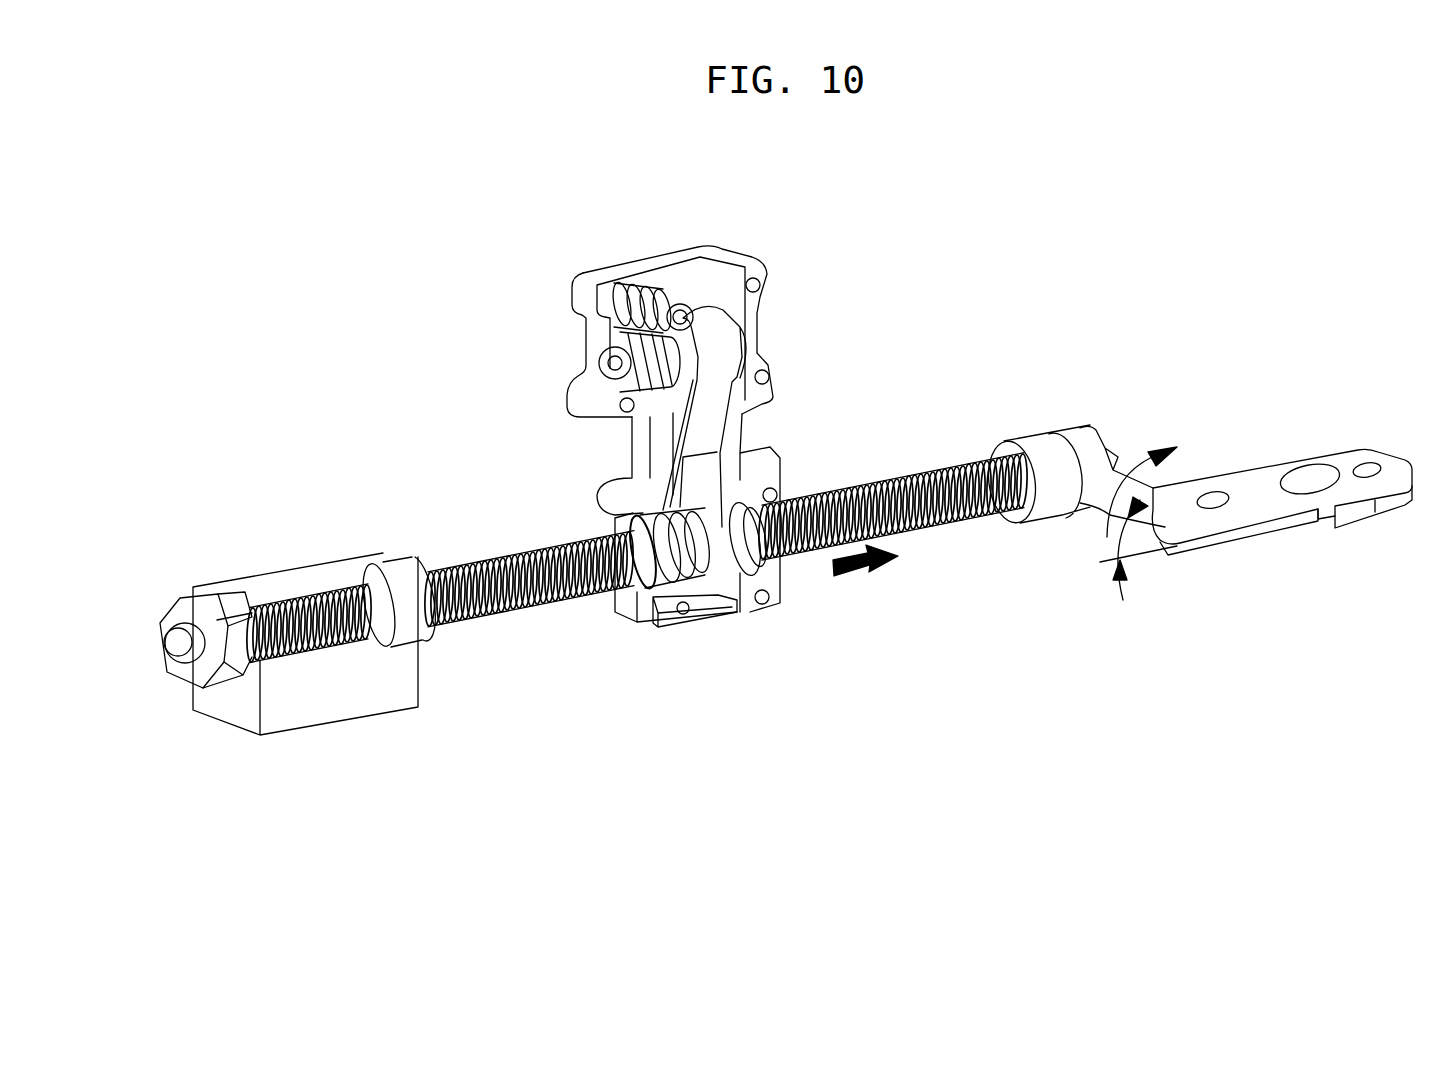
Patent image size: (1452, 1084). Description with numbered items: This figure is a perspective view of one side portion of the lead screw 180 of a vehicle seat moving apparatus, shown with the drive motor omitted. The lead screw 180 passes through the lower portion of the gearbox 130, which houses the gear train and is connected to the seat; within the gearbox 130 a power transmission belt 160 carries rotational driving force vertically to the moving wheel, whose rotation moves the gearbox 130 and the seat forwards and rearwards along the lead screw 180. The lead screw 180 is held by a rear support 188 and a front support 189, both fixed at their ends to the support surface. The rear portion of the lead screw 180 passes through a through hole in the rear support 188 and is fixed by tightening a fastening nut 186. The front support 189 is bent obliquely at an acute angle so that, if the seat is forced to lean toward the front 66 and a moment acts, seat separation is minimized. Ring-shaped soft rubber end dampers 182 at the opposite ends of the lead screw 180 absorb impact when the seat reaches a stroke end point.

The gearbox 130 is at (625, 272).
The power transmission belt 160 is at (733, 608).
The lead screw 180 is at (556, 608).
The end damper 182 is at (415, 568).
The fastening nut 186 is at (203, 577).
The rear support 188 is at (345, 687).
The front support 189 is at (1265, 523).
The front 66 is at (865, 579).